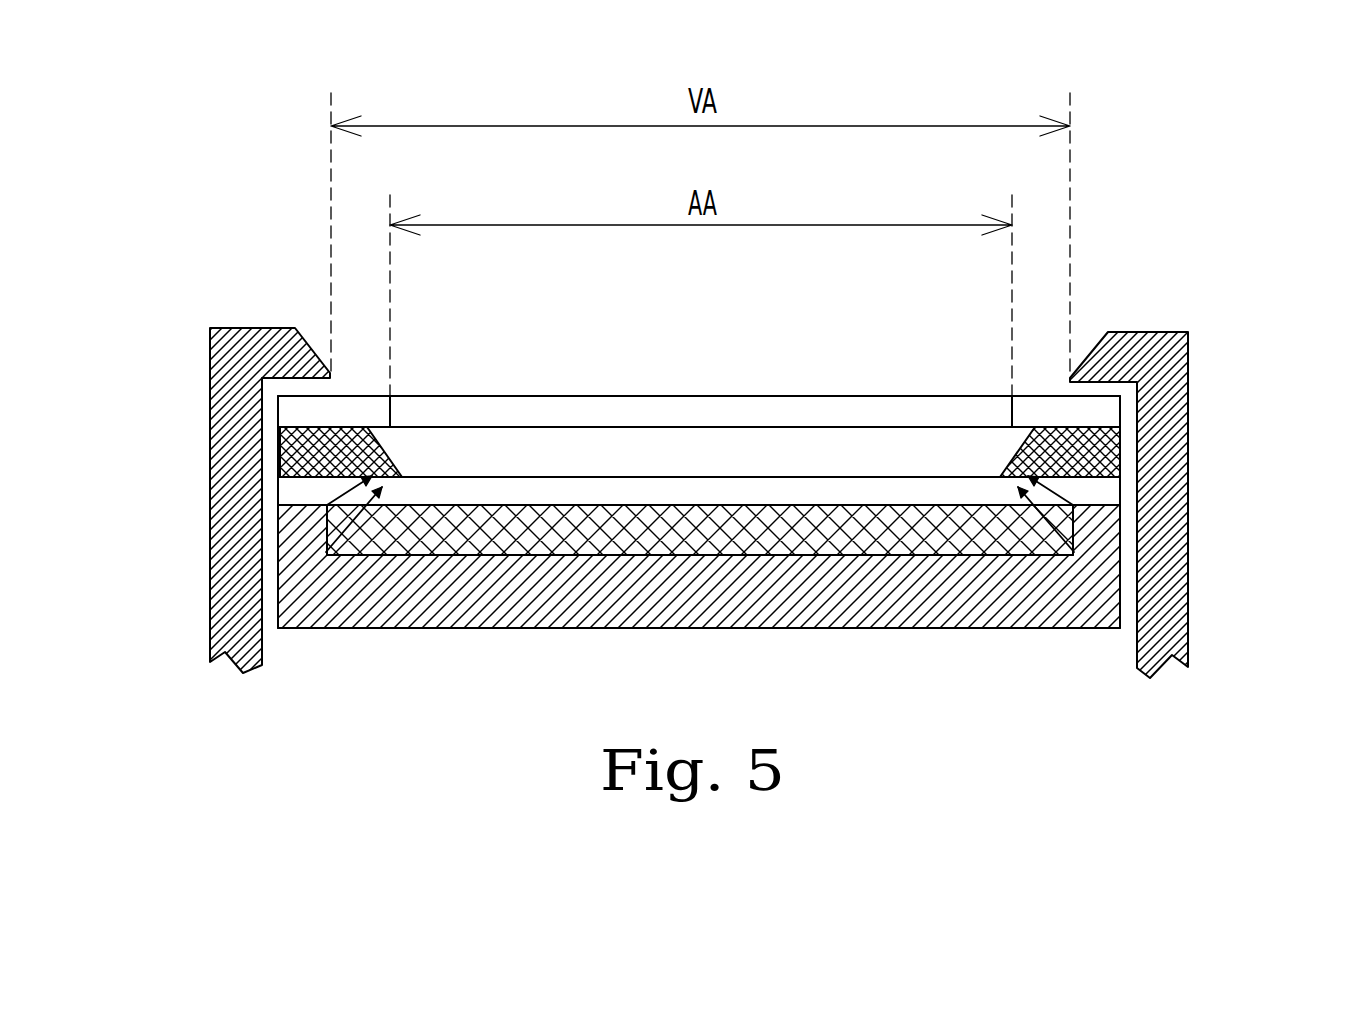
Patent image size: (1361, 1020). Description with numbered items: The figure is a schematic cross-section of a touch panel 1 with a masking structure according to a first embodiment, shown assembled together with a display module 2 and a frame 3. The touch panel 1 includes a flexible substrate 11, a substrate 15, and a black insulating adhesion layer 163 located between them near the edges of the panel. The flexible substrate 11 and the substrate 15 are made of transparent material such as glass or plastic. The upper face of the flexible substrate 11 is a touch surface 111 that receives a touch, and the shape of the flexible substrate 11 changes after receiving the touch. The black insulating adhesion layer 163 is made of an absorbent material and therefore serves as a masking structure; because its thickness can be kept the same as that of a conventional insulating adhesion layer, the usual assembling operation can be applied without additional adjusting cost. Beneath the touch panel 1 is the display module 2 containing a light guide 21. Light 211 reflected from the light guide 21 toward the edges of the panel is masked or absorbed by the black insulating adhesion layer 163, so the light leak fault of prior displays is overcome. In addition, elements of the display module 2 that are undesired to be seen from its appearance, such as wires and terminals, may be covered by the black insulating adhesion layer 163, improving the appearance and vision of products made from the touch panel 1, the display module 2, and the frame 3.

The touch panel 1 is at (1323, 383).
The flexible substrate 11 is at (1100, 416).
The touch surface 111 is at (550, 395).
The substrate 15 is at (1108, 499).
The black insulating adhesion layer 163 is at (307, 438).
The display module 2 is at (1068, 592).
The light guide 21 is at (325, 527).
The light 211 is at (330, 492).
The frame 3 is at (1132, 332).